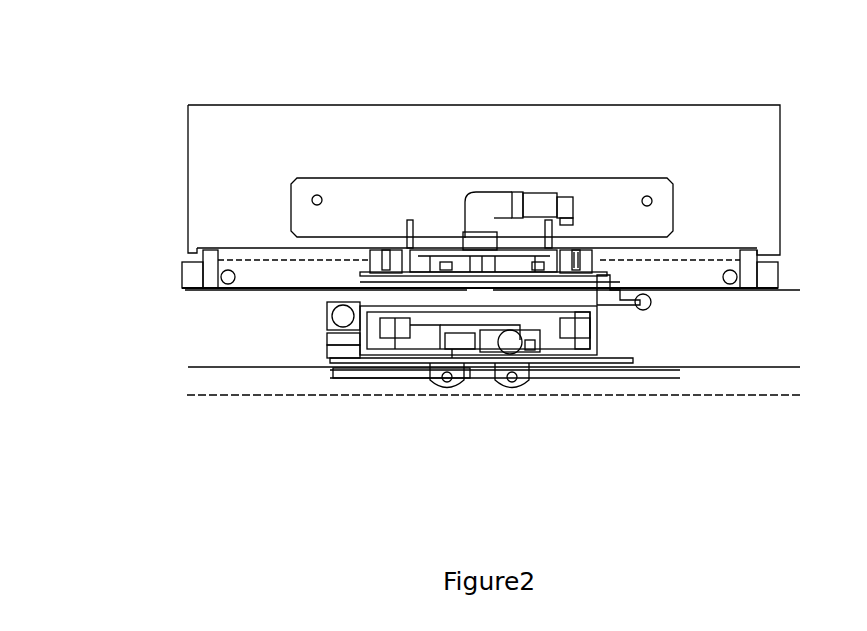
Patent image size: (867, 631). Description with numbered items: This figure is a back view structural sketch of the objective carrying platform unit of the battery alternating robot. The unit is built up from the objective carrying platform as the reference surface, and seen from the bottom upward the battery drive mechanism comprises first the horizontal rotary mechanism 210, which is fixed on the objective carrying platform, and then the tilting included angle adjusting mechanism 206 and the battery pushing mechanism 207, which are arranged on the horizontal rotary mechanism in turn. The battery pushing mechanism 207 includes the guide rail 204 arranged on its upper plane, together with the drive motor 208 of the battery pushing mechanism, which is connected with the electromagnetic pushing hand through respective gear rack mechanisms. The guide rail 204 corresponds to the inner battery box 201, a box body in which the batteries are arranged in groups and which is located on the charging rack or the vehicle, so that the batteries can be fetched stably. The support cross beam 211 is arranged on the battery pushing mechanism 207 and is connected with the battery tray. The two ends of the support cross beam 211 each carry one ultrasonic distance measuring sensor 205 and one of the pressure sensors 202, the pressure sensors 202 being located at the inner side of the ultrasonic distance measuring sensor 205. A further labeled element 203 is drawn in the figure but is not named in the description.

The inner battery box 201 is at (227, 172).
The pressure sensors 202 is at (211, 265).
The motor carriage 203 is at (457, 278).
The guide rail 204 is at (578, 255).
The ultrasonic distance measuring sensor 205 is at (728, 270).
The tilting included angle adjusting mechanism 206 is at (648, 306).
The battery pushing mechanism 207 is at (558, 323).
The drive motor of the battery pushing mechanism 208 is at (453, 350).
The horizontal rotary mechanism 210 is at (343, 372).
The support cross beam 211 is at (193, 280).